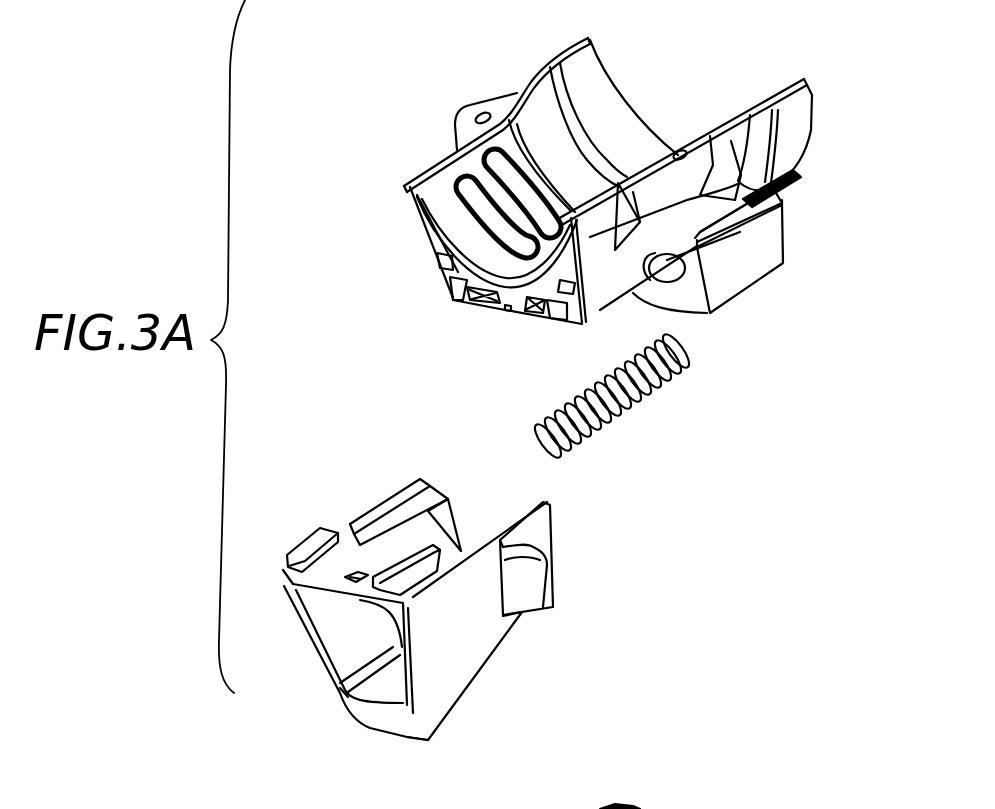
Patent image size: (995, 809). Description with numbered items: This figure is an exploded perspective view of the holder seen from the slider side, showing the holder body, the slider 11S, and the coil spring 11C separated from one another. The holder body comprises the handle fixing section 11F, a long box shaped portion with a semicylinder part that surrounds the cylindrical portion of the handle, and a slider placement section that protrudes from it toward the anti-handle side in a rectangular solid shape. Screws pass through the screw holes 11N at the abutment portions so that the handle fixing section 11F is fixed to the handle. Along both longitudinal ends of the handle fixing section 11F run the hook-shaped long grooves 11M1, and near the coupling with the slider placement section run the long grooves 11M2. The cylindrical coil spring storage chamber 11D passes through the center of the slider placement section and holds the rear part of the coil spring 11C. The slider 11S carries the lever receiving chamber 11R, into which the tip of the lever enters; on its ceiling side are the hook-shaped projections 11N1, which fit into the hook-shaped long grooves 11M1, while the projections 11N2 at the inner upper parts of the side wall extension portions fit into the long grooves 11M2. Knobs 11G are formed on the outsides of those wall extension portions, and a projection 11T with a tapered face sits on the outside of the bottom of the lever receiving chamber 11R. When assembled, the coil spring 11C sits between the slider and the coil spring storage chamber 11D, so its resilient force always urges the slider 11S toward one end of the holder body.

The screw holes 11N is at (478, 112).
The hook-shaped long grooves 11M1 is at (460, 304).
The long grooves 11M2 is at (783, 199).
The coil spring storage chamber 11D is at (720, 307).
The coil spring 11C is at (648, 404).
The hook-shaped projections 11N1 is at (313, 547).
The projections 11N2 is at (446, 500).
The knobs 11G is at (538, 586).
The lever receiving chamber 11R is at (348, 647).
The slider 11S is at (474, 689).
The projection with a tapered face 11T is at (408, 741).
The handle fixing section 11F is at (780, 808).